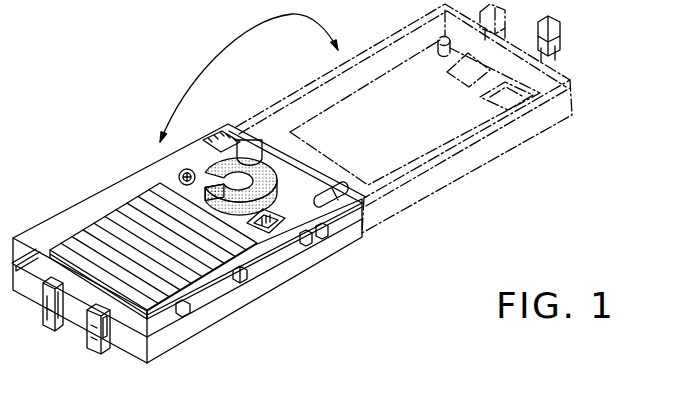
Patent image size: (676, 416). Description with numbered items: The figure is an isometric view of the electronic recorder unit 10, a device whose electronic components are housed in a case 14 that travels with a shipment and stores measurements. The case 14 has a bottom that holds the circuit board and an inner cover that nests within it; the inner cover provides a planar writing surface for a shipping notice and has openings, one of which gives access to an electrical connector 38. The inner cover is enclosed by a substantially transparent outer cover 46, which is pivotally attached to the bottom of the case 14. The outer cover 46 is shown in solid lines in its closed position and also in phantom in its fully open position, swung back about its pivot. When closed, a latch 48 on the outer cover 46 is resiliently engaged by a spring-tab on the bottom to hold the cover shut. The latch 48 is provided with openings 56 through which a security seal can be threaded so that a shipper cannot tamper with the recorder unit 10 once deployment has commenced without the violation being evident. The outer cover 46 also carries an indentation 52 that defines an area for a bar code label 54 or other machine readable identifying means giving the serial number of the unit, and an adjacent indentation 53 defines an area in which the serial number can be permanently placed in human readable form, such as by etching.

The electronic recorder unit 10 is at (371, 277).
The case 14 is at (254, 311).
The electrical connector 38 is at (299, 262).
The outer cover 46 is at (97, 186).
The latch 48 is at (556, 29).
The indentation 52 is at (217, 143).
The adjacent indentation 53 is at (344, 199).
The bar code label 54 is at (234, 140).
The openings 56 is at (112, 351).